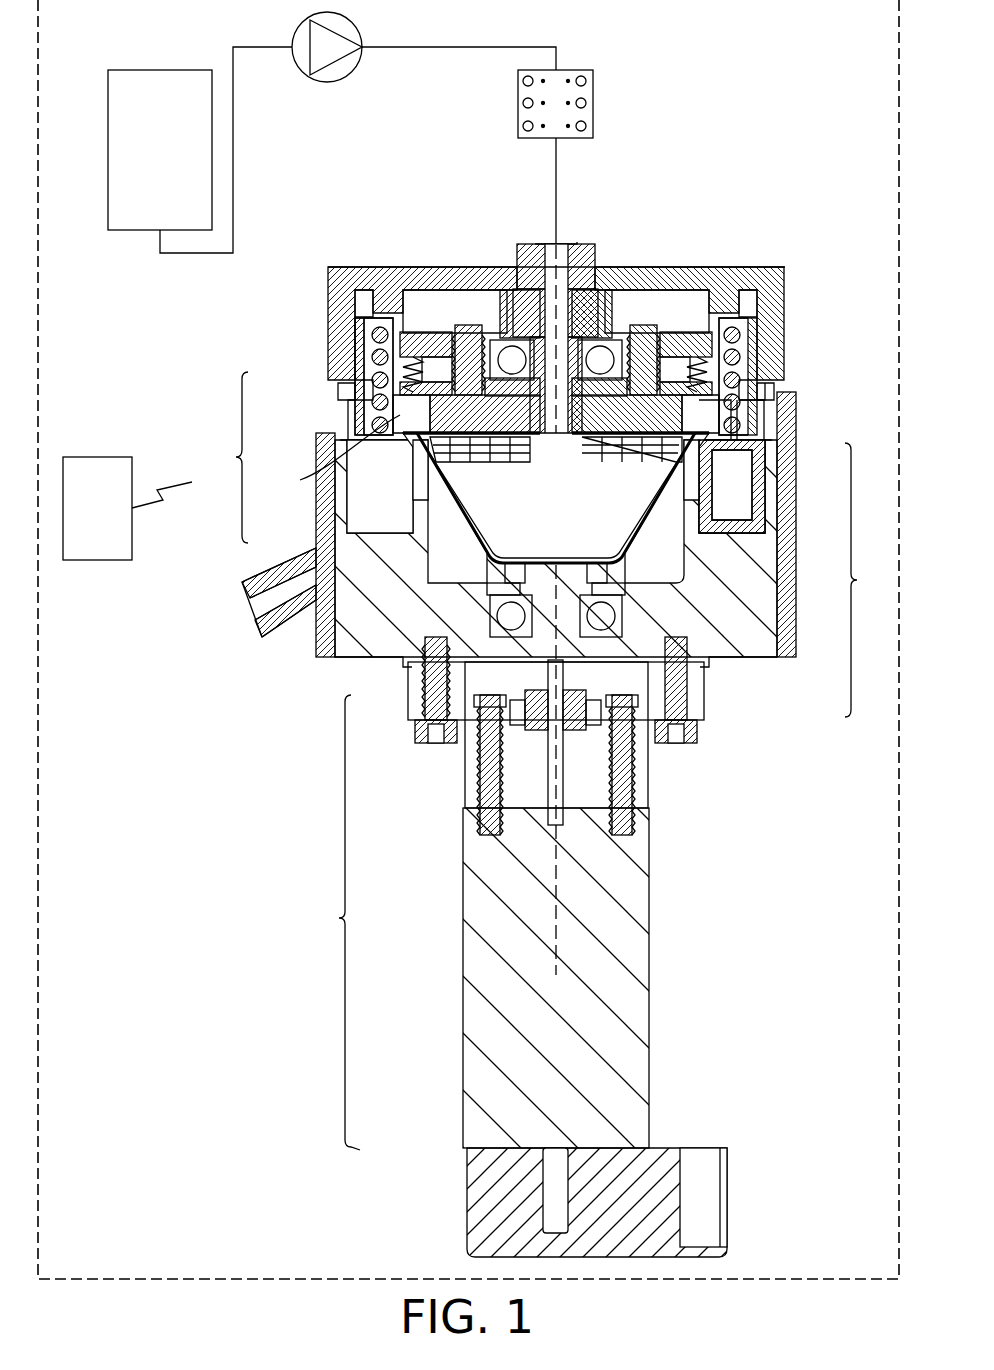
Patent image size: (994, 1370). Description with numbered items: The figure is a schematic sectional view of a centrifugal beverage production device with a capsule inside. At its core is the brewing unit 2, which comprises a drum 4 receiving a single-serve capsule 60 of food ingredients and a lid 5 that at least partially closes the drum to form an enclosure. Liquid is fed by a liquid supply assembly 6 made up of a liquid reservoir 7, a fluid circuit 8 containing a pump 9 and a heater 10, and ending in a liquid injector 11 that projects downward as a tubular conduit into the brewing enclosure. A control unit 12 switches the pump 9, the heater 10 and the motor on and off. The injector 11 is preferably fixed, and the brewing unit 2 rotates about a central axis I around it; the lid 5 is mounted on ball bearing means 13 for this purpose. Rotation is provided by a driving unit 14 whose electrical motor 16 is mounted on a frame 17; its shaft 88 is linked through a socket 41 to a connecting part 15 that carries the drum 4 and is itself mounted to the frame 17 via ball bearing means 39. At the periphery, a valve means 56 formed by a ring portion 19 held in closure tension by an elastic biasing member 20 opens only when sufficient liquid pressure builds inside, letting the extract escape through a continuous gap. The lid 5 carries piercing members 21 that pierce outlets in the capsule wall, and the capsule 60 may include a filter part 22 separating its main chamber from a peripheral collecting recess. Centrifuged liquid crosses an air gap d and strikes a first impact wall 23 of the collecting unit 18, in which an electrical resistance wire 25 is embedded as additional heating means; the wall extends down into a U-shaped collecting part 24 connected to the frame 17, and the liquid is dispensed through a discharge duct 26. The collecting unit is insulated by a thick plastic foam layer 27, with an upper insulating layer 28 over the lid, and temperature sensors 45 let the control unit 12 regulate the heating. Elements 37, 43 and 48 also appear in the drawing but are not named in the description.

The brewing unit 2 is at (228, 457).
The drum 4 is at (470, 541).
The lid 5 is at (460, 390).
The liquid supply assembly 6 is at (610, 160).
The liquid reservoir 7 is at (108, 76).
The fluid circuit 8 is at (233, 167).
The pump 9 is at (327, 82).
The heater 10 is at (593, 78).
The liquid injector 11 is at (580, 230).
The control unit 12 is at (113, 562).
The ball bearing means 13 is at (510, 344).
The driving unit 14 is at (329, 922).
The connecting part 15 is at (424, 702).
The electrical motor 16 is at (470, 1018).
The frame 17 is at (763, 642).
The collecting unit 18 is at (870, 580).
The ring portion 19 is at (742, 410).
The elastic biasing member 20 is at (742, 365).
The piercing members 21 is at (735, 430).
The filter part 22 is at (600, 462).
The first impact wall 23 is at (760, 468).
The U-shaped collecting part 24 is at (745, 500).
The electrical resistance wire 25 is at (742, 330).
The discharge duct 26 is at (263, 638).
The plastic foam layer 27 is at (797, 585).
The upper insulating layer 28 is at (328, 285).
The lower bearing 37 is at (560, 595).
The ball bearing means 39 is at (440, 640).
The socket 41 is at (536, 728).
The motor bolt 43 is at (640, 770).
The temperature sensors 45 is at (370, 325).
The nut 48 is at (412, 735).
The valve means 56 is at (360, 445).
The single-serve capsule 60 is at (450, 503).
The shaft 88 is at (558, 785).
The air gap d is at (408, 415).
The central axis I is at (560, 935).